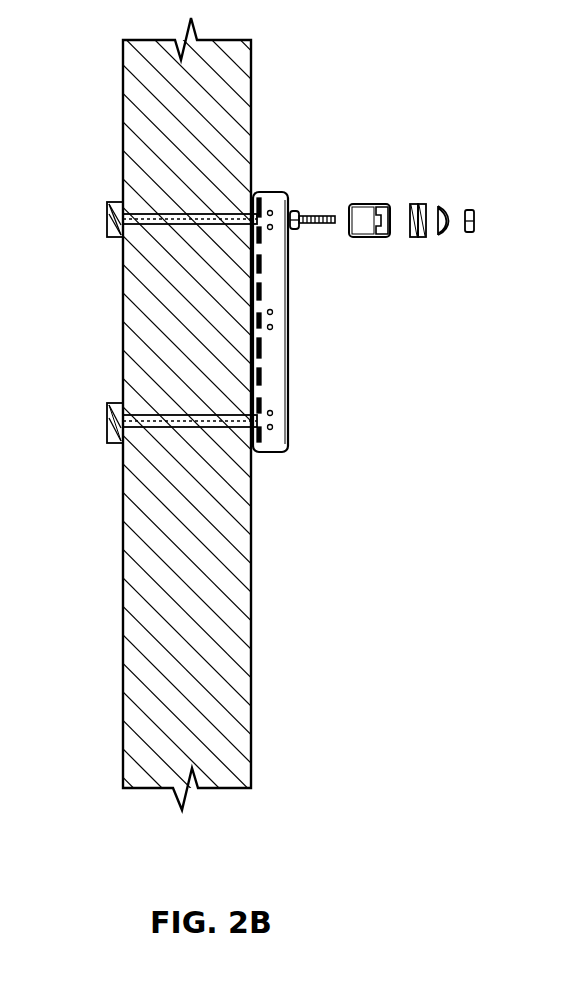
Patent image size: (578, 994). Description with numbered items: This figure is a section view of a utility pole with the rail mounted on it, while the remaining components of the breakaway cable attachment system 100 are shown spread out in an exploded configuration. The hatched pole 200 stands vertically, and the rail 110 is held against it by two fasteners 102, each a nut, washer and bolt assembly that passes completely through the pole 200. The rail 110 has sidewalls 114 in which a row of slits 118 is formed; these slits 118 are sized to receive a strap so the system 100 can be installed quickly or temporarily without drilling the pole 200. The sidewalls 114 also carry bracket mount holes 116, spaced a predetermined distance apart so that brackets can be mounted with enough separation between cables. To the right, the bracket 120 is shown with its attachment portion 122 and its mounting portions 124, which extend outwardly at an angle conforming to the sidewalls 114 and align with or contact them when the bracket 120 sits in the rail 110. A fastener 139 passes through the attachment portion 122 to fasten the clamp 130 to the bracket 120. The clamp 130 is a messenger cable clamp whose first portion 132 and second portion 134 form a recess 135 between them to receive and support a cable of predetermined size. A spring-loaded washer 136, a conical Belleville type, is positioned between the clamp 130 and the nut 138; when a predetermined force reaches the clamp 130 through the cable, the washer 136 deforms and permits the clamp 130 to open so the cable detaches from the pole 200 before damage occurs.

The breakaway cable attachment system 100 is at (408, 110).
The pole 200 is at (123, 122).
The fasteners 102 is at (107, 220).
The rail 110 is at (318, 284).
The sidewalls 114 is at (288, 340).
The bracket mount holes 116 is at (268, 428).
The slits 118 is at (258, 372).
The fastener 139 is at (305, 228).
The bracket 120 is at (358, 238).
The attachment portion 122 is at (400, 238).
The mounting portions 124 is at (359, 229).
The clamp 130 is at (419, 233).
The first portion 132 is at (412, 204).
The second portion 134 is at (426, 204).
The recess 135 is at (440, 210).
The spring-loaded washer 136 is at (478, 237).
The nut 138 is at (476, 222).